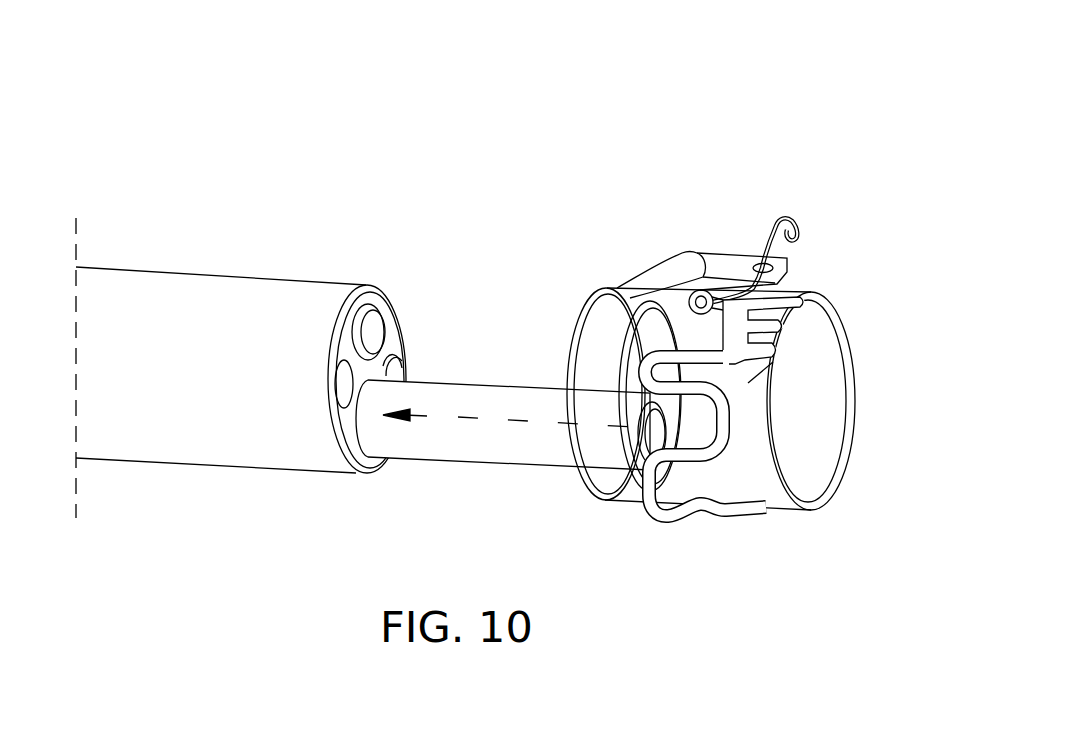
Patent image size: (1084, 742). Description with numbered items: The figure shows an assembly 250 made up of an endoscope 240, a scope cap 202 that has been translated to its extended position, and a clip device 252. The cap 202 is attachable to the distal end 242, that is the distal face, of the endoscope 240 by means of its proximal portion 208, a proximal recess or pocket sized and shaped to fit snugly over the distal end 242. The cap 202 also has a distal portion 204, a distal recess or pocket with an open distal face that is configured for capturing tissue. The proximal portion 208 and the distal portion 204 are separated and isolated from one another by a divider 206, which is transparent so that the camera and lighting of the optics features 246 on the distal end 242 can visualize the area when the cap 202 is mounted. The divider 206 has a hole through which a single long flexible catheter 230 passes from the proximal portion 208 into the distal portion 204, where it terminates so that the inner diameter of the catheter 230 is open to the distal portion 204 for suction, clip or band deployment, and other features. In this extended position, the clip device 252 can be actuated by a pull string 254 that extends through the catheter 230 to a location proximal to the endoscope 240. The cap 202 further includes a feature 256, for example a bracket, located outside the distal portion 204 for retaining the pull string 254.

The scope cap 202 is at (708, 205).
The distal portion 204 is at (830, 357).
The divider 206 is at (637, 372).
The proximal portion 208 is at (607, 274).
The catheter 230 is at (535, 450).
The endoscope 240 is at (248, 258).
The distal end 242 is at (372, 287).
The optics features 246 is at (396, 375).
The assembly 250 is at (810, 160).
The clip device 252 is at (750, 443).
The pull string 254 is at (799, 240).
The feature 256 is at (693, 255).